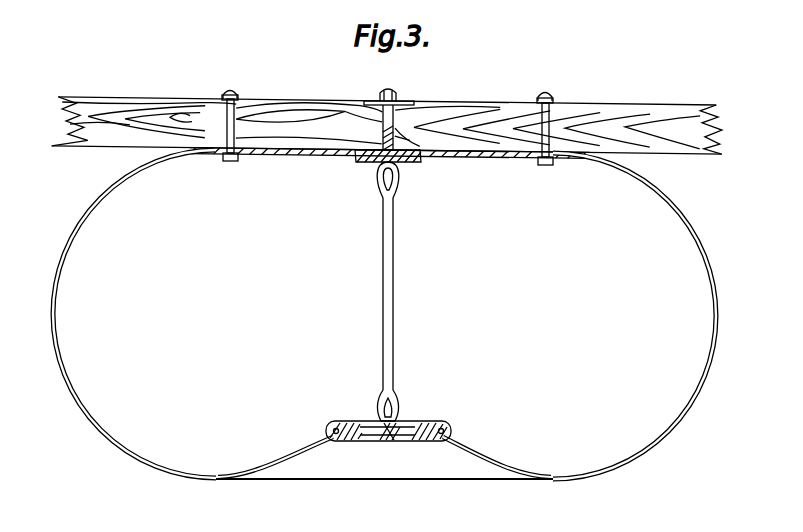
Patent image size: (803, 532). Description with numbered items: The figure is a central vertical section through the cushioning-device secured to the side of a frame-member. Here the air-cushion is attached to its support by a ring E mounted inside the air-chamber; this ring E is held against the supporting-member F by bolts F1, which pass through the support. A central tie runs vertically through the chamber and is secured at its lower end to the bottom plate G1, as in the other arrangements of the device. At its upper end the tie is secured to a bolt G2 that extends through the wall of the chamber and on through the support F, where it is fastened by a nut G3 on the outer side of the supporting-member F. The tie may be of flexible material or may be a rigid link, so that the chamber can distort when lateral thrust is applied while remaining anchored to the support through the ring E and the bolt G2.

The supporting-member F is at (613, 127).
The bolts F1 is at (544, 130).
The ring E is at (560, 153).
The bottom plate G1 is at (388, 442).
The bolt G2 is at (385, 152).
The nut G3 is at (394, 97).